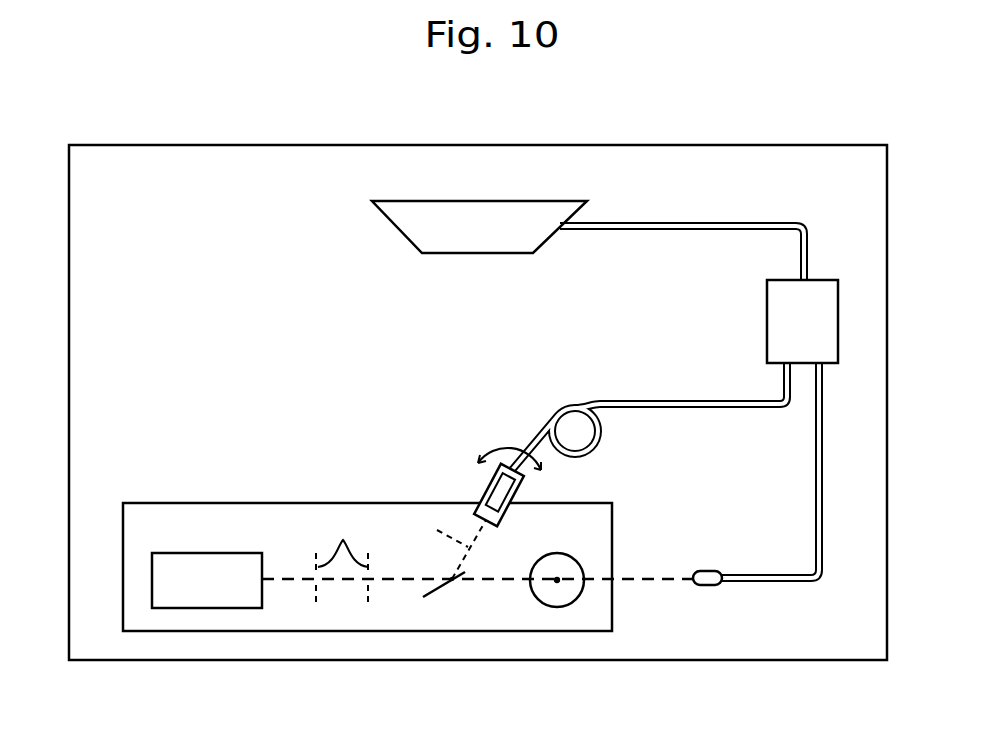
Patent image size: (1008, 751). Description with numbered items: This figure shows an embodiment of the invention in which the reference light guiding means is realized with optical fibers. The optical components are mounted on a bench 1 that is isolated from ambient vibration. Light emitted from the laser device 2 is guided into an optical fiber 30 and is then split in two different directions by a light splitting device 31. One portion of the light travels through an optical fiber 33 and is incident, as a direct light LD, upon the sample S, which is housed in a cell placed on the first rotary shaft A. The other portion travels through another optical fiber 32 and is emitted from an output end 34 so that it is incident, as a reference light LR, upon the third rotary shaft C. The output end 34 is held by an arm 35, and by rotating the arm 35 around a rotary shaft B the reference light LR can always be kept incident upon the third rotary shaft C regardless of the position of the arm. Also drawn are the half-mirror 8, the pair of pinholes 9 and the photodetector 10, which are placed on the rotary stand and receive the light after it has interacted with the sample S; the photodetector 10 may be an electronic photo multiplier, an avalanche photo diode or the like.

The bench 1 is at (300, 160).
The laser device 2 is at (481, 250).
The half-mirror 8 is at (472, 568).
The pair of pinholes 9 is at (342, 556).
The photodetector 10 is at (248, 553).
The optical fiber 30 is at (655, 231).
The light splitting device 31 is at (775, 317).
The optical fiber 32 is at (642, 398).
The optical fiber 33 is at (815, 478).
The output end 34 is at (490, 492).
The arm 35 is at (523, 493).
The rotary shaft B is at (483, 467).
The reference light LR is at (433, 529).
The direct light LD is at (648, 578).
The third rotary shaft C is at (457, 583).
The sample S is at (555, 556).
The first rotary shaft A is at (559, 577).